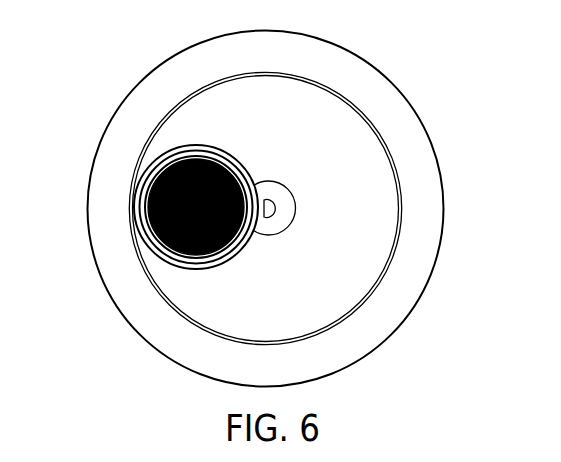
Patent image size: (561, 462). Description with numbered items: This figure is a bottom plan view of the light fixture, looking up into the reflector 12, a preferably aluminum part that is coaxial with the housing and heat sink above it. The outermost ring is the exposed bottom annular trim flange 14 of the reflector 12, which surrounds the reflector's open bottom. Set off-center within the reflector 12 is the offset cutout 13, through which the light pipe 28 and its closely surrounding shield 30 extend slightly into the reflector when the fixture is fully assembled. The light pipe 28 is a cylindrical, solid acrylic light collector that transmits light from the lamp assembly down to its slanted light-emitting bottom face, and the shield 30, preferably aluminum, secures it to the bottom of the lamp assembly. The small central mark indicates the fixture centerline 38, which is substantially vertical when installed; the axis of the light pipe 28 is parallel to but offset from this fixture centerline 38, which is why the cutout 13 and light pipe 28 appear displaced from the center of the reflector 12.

The reflector 12 is at (352, 137).
The offset cutout 13 is at (160, 245).
The bottom annular trim flange 14 is at (112, 153).
The light pipe 28 is at (222, 163).
The shield 30 is at (153, 192).
The fixture centerline 38 is at (273, 215).